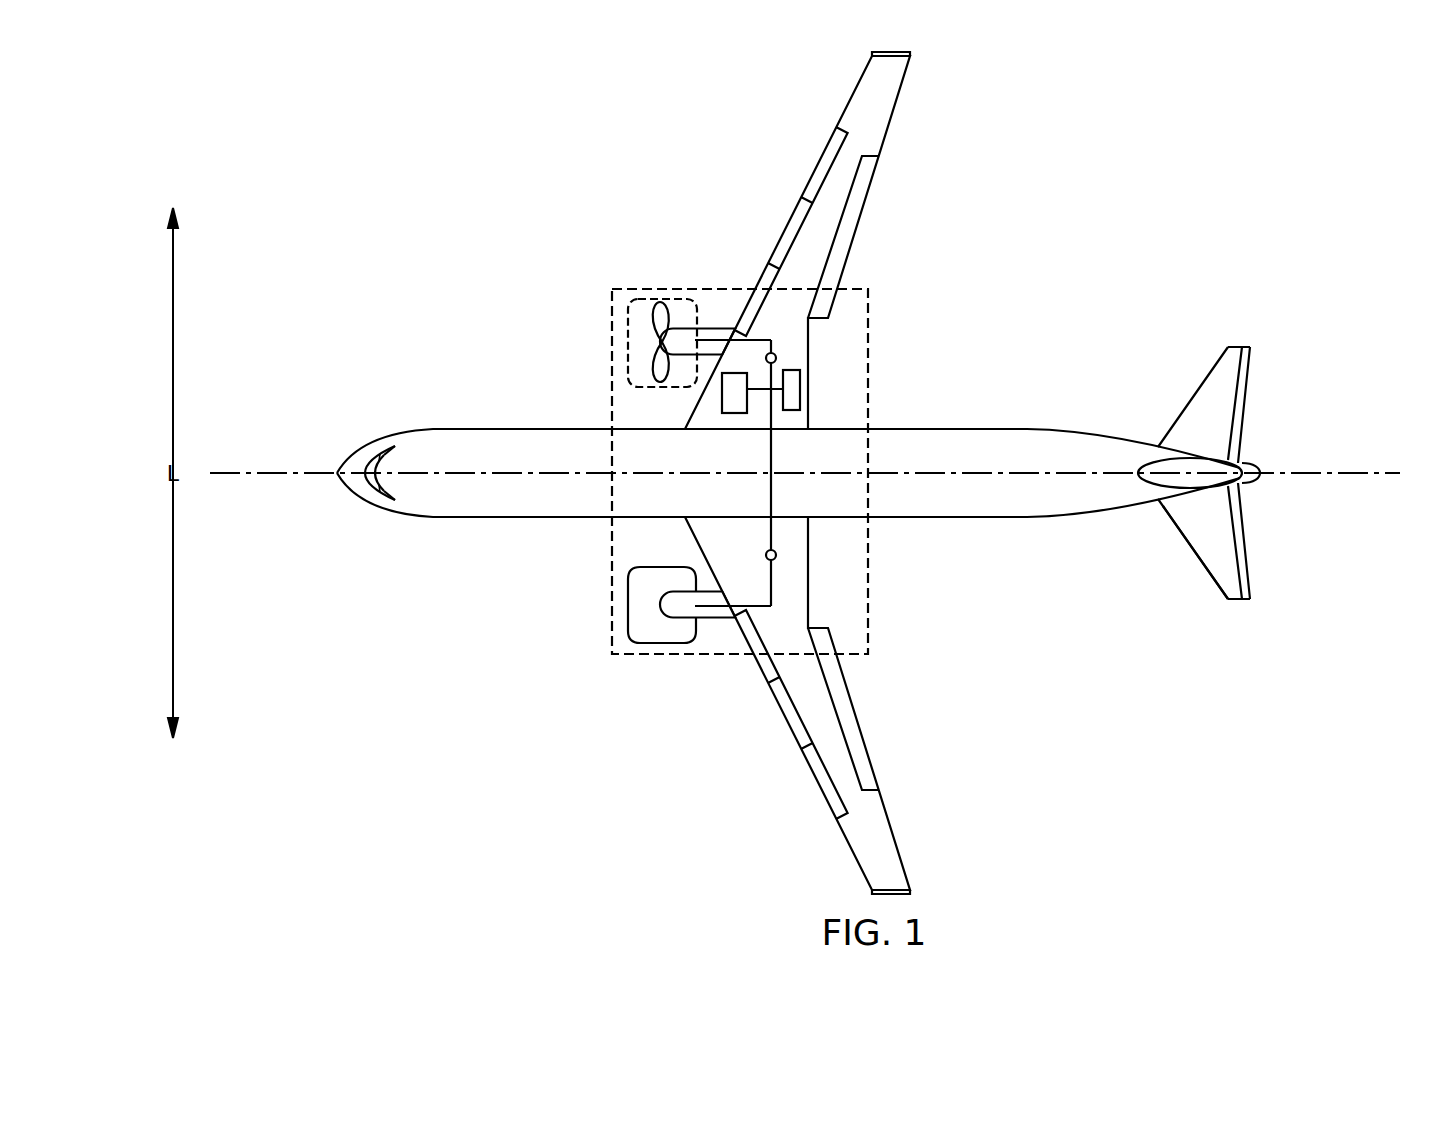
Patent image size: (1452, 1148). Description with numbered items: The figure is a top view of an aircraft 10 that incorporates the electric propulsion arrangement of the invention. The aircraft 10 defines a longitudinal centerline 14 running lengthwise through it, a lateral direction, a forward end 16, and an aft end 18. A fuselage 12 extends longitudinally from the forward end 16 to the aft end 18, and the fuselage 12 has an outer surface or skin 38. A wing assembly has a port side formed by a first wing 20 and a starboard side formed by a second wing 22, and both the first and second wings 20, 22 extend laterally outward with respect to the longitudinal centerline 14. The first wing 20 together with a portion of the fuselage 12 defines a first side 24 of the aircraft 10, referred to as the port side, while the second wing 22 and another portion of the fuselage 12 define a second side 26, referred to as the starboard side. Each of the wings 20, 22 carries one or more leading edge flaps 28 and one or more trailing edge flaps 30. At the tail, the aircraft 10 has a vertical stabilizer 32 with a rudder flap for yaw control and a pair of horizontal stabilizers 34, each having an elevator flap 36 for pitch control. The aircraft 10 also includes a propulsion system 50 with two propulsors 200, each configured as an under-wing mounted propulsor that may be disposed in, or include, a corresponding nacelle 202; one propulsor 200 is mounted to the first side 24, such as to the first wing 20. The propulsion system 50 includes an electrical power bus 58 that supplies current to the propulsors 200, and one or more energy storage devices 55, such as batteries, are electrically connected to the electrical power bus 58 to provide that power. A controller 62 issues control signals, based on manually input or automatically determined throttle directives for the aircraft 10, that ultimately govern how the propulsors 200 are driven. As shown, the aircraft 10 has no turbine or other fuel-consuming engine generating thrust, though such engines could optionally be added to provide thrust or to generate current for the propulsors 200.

The aircraft 10 is at (1043, 168).
The fuselage 12 is at (412, 500).
The longitudinal centerline 14 is at (272, 484).
The forward end 16 is at (336, 486).
The aft end 18 is at (1192, 587).
The first wing 20 is at (840, 772).
The second wing 22 is at (884, 84).
The first side 24 is at (657, 664).
The second side 26 is at (615, 280).
The leading edge flap 28 is at (788, 712).
The trailing edge flap 30 is at (860, 727).
The vertical stabilizer 32 is at (1250, 482).
The horizontal stabilizer 34 is at (1212, 378).
The elevator flap 36 is at (1240, 378).
The outer surface or skin 38 is at (998, 492).
The propulsion system 50 is at (747, 449).
The energy storage device 55 is at (802, 390).
The electrical power bus 58 is at (789, 356).
The controller 62 is at (720, 400).
The propulsor 200 is at (650, 622).
The nacelle 202 is at (628, 604).